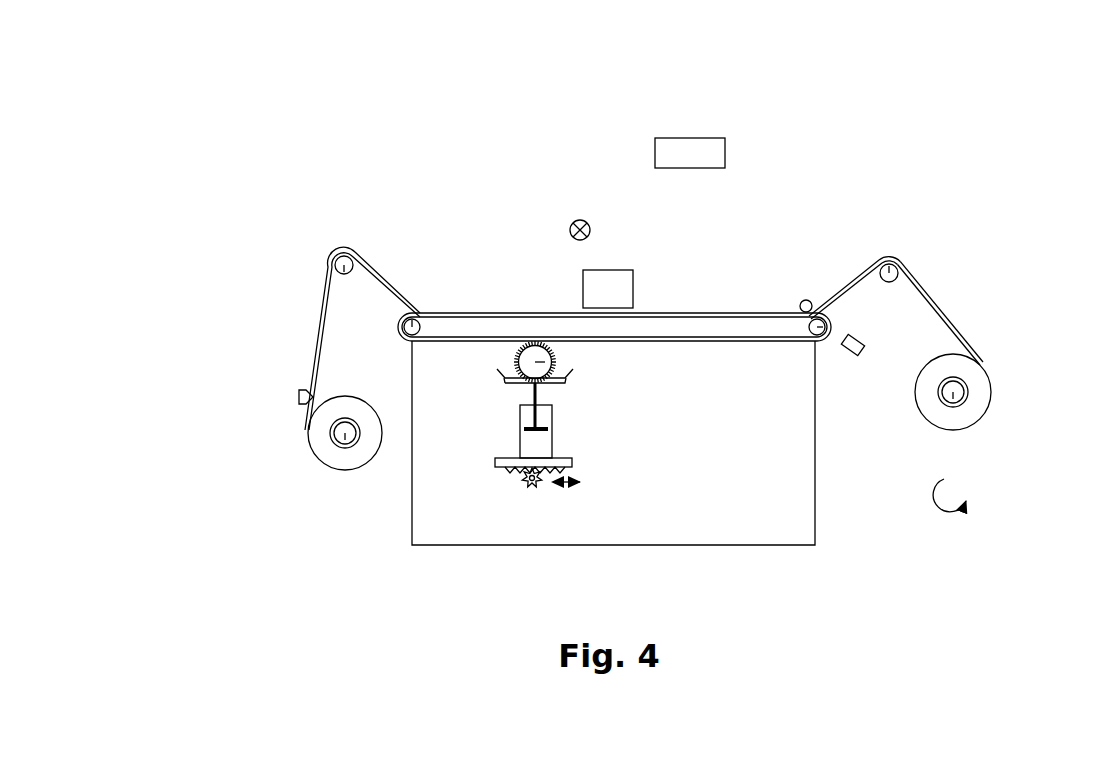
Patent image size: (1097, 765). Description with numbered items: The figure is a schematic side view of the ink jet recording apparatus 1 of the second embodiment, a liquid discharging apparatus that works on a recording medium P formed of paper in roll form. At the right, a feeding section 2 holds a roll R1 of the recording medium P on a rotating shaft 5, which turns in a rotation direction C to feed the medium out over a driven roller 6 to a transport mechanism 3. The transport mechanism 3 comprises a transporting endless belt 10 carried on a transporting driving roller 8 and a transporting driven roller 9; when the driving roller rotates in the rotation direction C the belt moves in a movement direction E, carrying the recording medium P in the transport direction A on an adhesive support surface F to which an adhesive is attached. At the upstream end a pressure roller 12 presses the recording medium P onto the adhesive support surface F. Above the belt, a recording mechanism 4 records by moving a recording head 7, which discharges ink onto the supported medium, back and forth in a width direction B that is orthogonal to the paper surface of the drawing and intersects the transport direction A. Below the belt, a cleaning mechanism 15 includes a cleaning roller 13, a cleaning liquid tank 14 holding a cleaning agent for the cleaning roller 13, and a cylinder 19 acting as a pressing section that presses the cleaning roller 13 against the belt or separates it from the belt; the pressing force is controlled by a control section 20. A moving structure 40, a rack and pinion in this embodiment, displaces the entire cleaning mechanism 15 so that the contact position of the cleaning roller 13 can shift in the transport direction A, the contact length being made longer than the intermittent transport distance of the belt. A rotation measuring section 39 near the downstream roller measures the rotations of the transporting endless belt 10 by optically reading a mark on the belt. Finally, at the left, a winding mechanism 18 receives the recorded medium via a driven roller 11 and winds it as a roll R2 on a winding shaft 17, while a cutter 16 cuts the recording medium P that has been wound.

The ink jet recording apparatus 1 is at (882, 136).
The feeding section 2 is at (1022, 310).
The transport mechanism 3 is at (663, 370).
The recording mechanism 4 is at (537, 200).
The rotating shaft 5 is at (953, 392).
The driven roller 6 is at (888, 265).
The recording head 7 is at (583, 283).
The transporting driving roller 8 is at (425, 312).
The transporting driven roller 9 is at (828, 335).
The transporting endless belt 10 is at (783, 345).
The driven roller 11 is at (350, 255).
The pressure roller 12 is at (803, 300).
The cleaning roller 13 is at (568, 372).
The cleaning liquid tank 14 is at (510, 380).
The cleaning mechanism 15 is at (608, 452).
The cutter 16 is at (298, 397).
The winding shaft 17 is at (345, 438).
The winding mechanism 18 is at (205, 382).
The cylinder 19 is at (540, 440).
The control section 20 is at (700, 148).
The rotation measuring section 39 is at (863, 340).
The moving structure 40 is at (538, 490).
The roll R1 is at (978, 385).
The roll R2 is at (370, 450).
The recording medium P is at (912, 272).
The adhesive support surface F is at (450, 343).
The transport direction A is at (383, 248).
The width direction B is at (580, 216).
The rotation direction C is at (949, 495).
The movement direction E is at (700, 302).